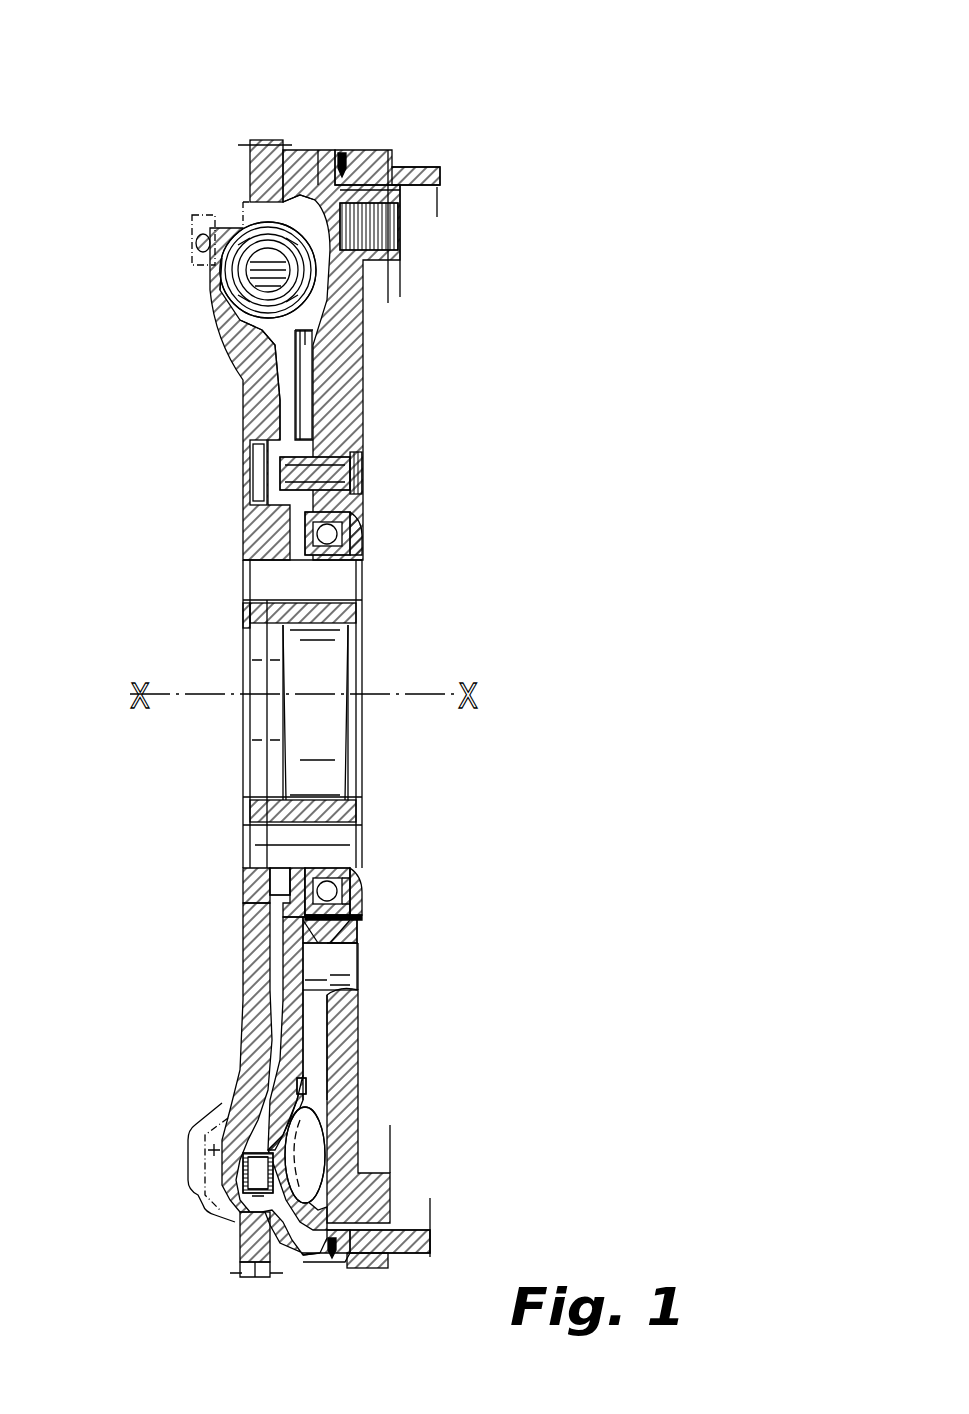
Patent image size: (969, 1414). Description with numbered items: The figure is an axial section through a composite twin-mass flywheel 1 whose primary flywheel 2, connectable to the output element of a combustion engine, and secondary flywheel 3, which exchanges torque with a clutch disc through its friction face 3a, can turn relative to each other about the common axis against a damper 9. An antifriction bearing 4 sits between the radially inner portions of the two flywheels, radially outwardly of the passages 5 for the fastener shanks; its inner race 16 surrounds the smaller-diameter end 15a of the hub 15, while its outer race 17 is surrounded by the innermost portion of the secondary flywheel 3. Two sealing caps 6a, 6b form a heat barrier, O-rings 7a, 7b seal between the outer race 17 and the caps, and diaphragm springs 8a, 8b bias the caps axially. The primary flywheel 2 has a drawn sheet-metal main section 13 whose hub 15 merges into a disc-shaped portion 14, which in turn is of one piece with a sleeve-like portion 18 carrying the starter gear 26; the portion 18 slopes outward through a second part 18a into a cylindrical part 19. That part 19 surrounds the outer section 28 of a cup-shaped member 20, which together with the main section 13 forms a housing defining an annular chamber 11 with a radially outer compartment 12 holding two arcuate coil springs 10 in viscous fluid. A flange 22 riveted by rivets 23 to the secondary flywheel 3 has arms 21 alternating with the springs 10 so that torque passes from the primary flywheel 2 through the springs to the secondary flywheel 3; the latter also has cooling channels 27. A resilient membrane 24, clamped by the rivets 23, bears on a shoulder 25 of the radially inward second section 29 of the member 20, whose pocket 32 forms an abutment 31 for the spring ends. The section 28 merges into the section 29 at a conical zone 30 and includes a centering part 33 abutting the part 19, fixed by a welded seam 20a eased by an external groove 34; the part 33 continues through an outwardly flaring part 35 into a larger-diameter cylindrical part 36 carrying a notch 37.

The composite flywheel 1 is at (200, 787).
The primary flywheel 2 is at (250, 532).
The secondary flywheel 3 is at (345, 312).
The friction face 3a is at (364, 1043).
The antifriction bearing 4 is at (355, 535).
The passages 5 is at (320, 838).
The sealing cap 6a is at (358, 918).
The sealing cap 6b is at (312, 918).
The O-ring 7a is at (355, 908).
The O-ring 7b is at (352, 920).
The diaphragm spring 8a is at (348, 886).
The diaphragm spring 8b is at (297, 888).
The damper 9 is at (212, 259).
The arcuate coil springs 10 is at (225, 277).
The annular chamber 11 is at (270, 405).
The compartment 12 is at (248, 278).
The main section 13 is at (262, 425).
The disc-shaped portion 14 is at (252, 873).
The hub 15 is at (320, 812).
The end of hub 15a is at (355, 870).
The inner race 16 is at (352, 880).
The outer race 17 is at (297, 903).
The sleeve-like portion 18 is at (257, 208).
The second part 18a is at (290, 150).
The cylindrical part 19 is at (316, 150).
The cup-shaped member 20 is at (367, 1240).
The welded seam 20a is at (332, 1258).
The arms 21 is at (268, 270).
The flange 22 is at (296, 1050).
The rivets 23 is at (320, 468).
The resilient membrane 24 is at (308, 380).
The shoulder 25 is at (300, 1083).
The starter gear 26 is at (258, 1262).
The channels 27 is at (325, 985).
The outer section 28 is at (367, 1268).
The second section 29 is at (262, 1178).
The zone of merger 30 is at (300, 1227).
The abutment 31 is at (245, 1157).
The pocket 32 is at (300, 1148).
The centering part 33 is at (318, 1262).
The external groove 34 is at (337, 148).
The outwardly flaring part 35 is at (388, 150).
The larger-diameter cylindrical part 36 is at (406, 150).
The notch 37 is at (440, 175).